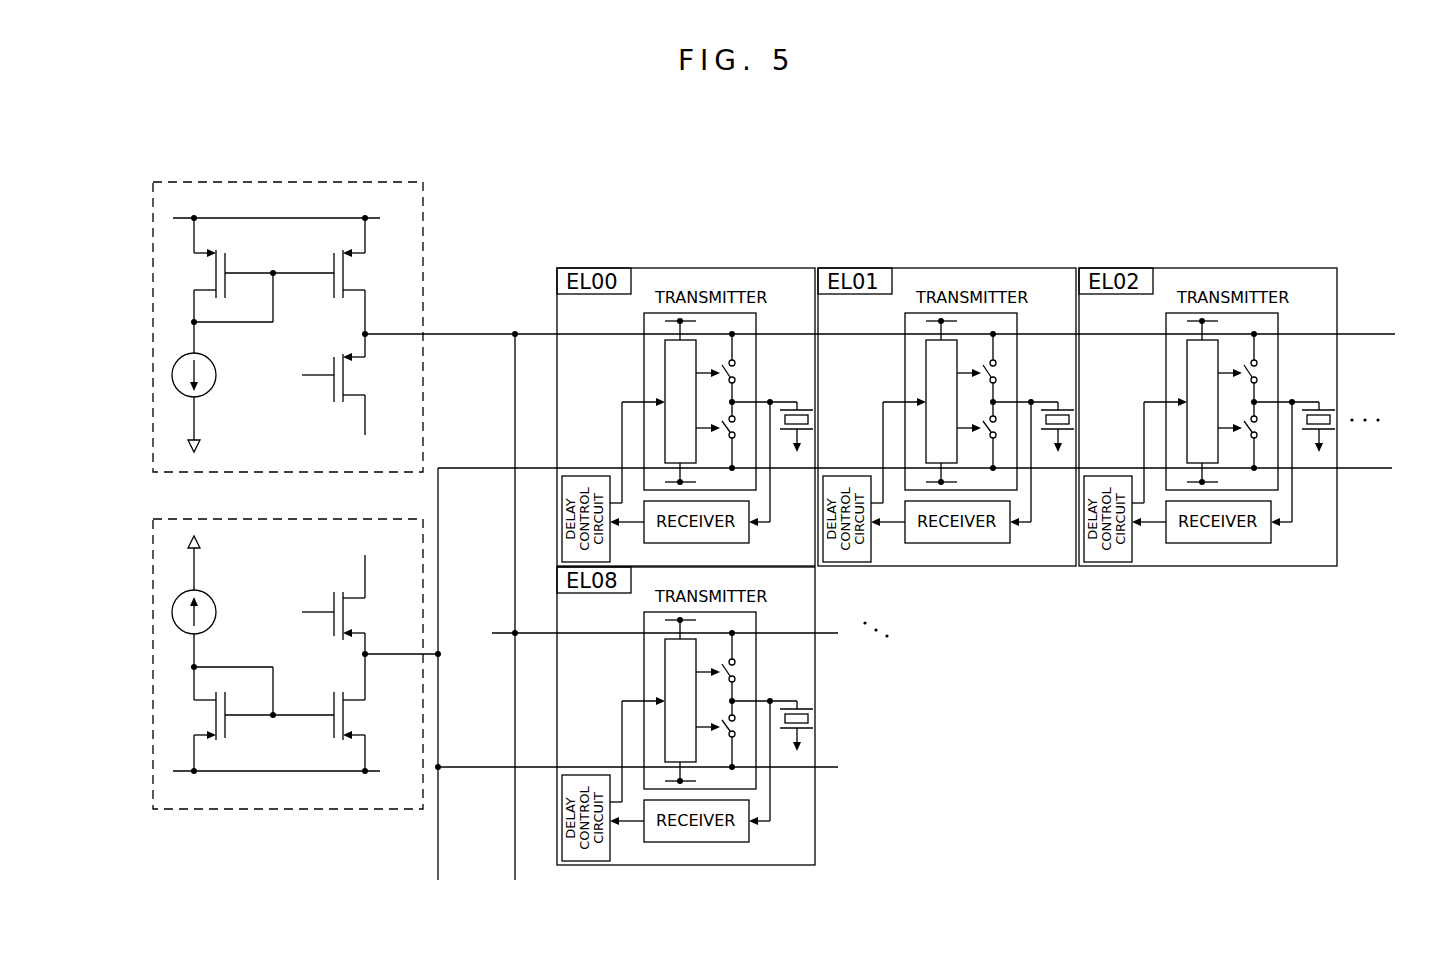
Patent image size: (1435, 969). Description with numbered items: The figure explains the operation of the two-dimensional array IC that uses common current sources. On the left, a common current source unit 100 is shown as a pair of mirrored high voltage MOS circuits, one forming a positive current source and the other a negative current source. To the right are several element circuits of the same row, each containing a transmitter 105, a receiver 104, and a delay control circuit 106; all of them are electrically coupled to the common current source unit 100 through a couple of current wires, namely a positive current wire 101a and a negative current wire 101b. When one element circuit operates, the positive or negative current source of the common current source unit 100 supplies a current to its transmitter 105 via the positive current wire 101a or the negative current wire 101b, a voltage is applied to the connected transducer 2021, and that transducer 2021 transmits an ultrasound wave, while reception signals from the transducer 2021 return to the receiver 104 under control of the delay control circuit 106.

The common current source unit 100 is at (135, 185).
The positive current wire 101a is at (468, 334).
The negative current wire 101b is at (1353, 470).
The receiver 104 is at (750, 533).
The transmitter 105 is at (655, 350).
The delay control circuit 106 is at (558, 503).
The transducer 2021 is at (792, 395).